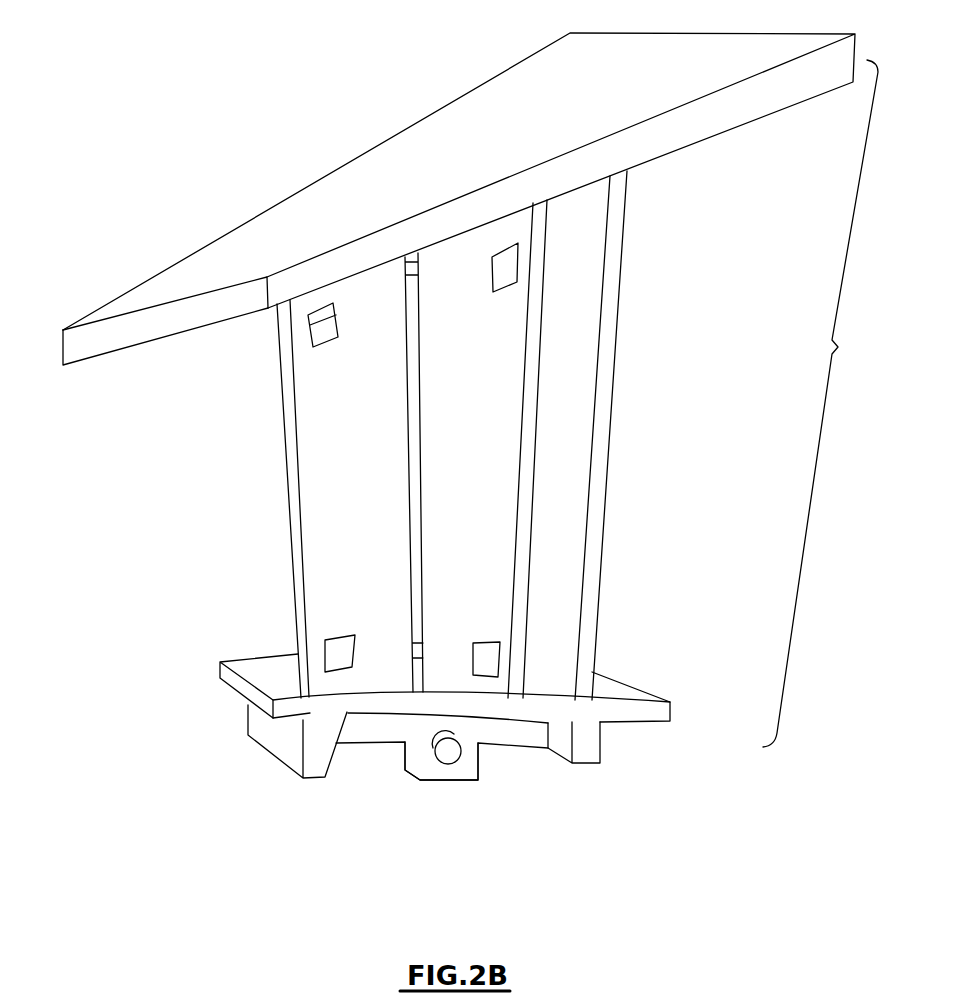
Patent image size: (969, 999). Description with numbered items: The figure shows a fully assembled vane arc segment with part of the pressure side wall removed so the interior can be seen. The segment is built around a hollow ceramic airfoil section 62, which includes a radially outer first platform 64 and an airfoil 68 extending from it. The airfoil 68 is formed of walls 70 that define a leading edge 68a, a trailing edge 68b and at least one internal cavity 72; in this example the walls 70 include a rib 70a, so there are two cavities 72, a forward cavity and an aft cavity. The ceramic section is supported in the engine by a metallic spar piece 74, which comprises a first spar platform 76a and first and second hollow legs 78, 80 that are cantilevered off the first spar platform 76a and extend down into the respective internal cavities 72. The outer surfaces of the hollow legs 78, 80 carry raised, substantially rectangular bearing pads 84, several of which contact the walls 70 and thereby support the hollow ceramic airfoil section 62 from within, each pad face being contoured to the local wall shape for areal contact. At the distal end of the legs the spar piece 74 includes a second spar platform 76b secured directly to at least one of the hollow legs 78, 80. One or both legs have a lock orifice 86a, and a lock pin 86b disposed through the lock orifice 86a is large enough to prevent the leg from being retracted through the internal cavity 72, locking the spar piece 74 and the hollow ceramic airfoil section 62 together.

The hollow ceramic airfoil section 62 is at (822, 403).
The first platform 64 is at (84, 361).
The airfoil 68 is at (237, 684).
The leading edge 68a is at (293, 533).
The trailing edge 68b is at (610, 477).
The walls 70 is at (587, 273).
The rib 70a is at (417, 520).
The internal cavity 72 is at (280, 492).
The spar piece 74 is at (314, 178).
The first spar platform 76a is at (93, 313).
The second spar platform 76b is at (314, 754).
The first hollow leg 78 is at (327, 437).
The second hollow leg 80 is at (505, 360).
The raised bearing pad 84 is at (410, 282).
The lock orifice 86a is at (493, 746).
The lock pin 86b is at (447, 755).